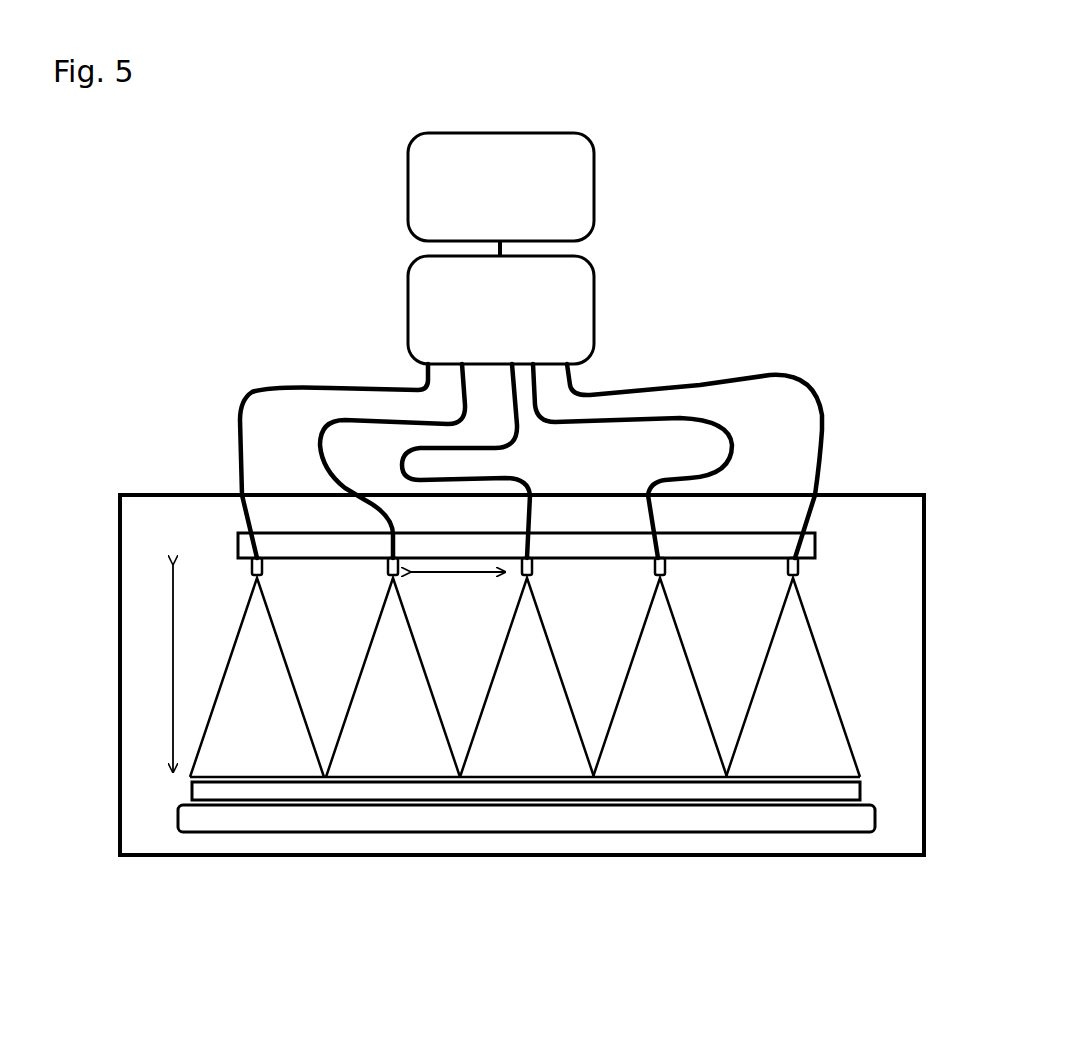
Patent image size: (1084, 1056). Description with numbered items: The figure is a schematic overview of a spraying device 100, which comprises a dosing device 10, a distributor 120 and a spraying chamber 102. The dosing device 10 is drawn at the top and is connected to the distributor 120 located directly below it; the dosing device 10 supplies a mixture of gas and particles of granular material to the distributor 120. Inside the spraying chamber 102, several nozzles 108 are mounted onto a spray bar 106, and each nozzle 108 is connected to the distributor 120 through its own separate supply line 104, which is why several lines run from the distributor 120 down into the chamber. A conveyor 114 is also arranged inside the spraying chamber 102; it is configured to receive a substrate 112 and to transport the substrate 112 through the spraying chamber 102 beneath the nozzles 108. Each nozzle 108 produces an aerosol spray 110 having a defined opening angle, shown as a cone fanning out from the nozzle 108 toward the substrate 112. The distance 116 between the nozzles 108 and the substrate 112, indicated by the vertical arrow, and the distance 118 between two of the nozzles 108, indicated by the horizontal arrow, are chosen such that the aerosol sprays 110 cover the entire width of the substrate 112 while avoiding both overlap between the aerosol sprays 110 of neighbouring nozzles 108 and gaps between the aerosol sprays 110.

The dosing device 10 is at (565, 157).
The spraying device 100 is at (798, 208).
The spraying chamber 102 is at (797, 557).
The supply line 104 is at (337, 417).
The spray bar 106 is at (565, 530).
The nozzle 108 is at (795, 565).
The aerosol spray 110 is at (532, 733).
The substrate 112 is at (240, 790).
The conveyor 114 is at (787, 820).
The distance between nozzles and substrate 116 is at (170, 597).
The distance between two nozzles 118 is at (457, 578).
The distributor 120 is at (427, 318).